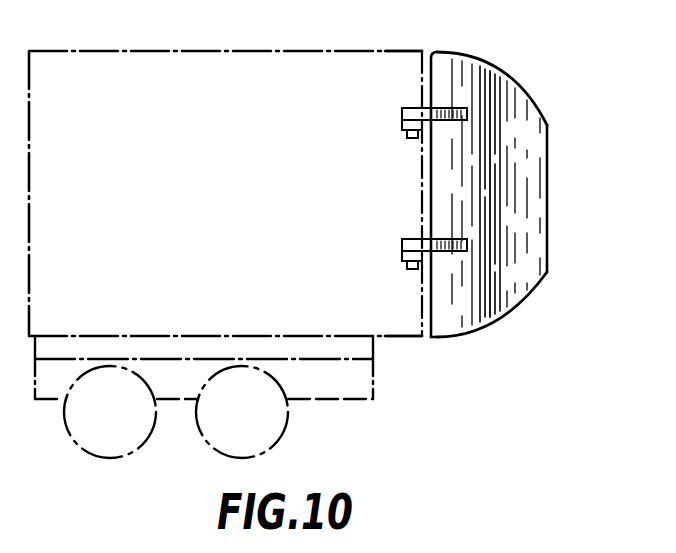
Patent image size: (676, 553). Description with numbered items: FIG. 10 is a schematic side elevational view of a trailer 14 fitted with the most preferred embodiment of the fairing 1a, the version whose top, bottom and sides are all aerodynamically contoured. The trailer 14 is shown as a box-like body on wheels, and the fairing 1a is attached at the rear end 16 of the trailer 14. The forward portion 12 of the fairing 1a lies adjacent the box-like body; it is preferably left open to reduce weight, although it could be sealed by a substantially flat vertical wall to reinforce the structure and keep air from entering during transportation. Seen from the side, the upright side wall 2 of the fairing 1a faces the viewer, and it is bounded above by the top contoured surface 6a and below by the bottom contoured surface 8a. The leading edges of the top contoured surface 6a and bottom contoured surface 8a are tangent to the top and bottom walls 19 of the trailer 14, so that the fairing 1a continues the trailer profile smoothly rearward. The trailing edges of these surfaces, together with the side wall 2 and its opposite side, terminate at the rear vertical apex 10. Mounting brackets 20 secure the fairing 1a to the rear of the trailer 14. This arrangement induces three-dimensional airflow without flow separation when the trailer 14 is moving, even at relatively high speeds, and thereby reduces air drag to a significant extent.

The fairing 1a is at (576, 136).
The side wall 2 is at (523, 243).
The top contoured surface 6a is at (492, 75).
The bottom contoured surface 8a is at (510, 305).
The vertical apex 10 is at (548, 183).
The forward portion 12 is at (429, 181).
The trailer 14 is at (236, 215).
The rear end of the trailer 16 is at (436, 341).
The top and bottom walls of the trailer 19 is at (358, 50).
The mounting brackets 20 is at (412, 108).